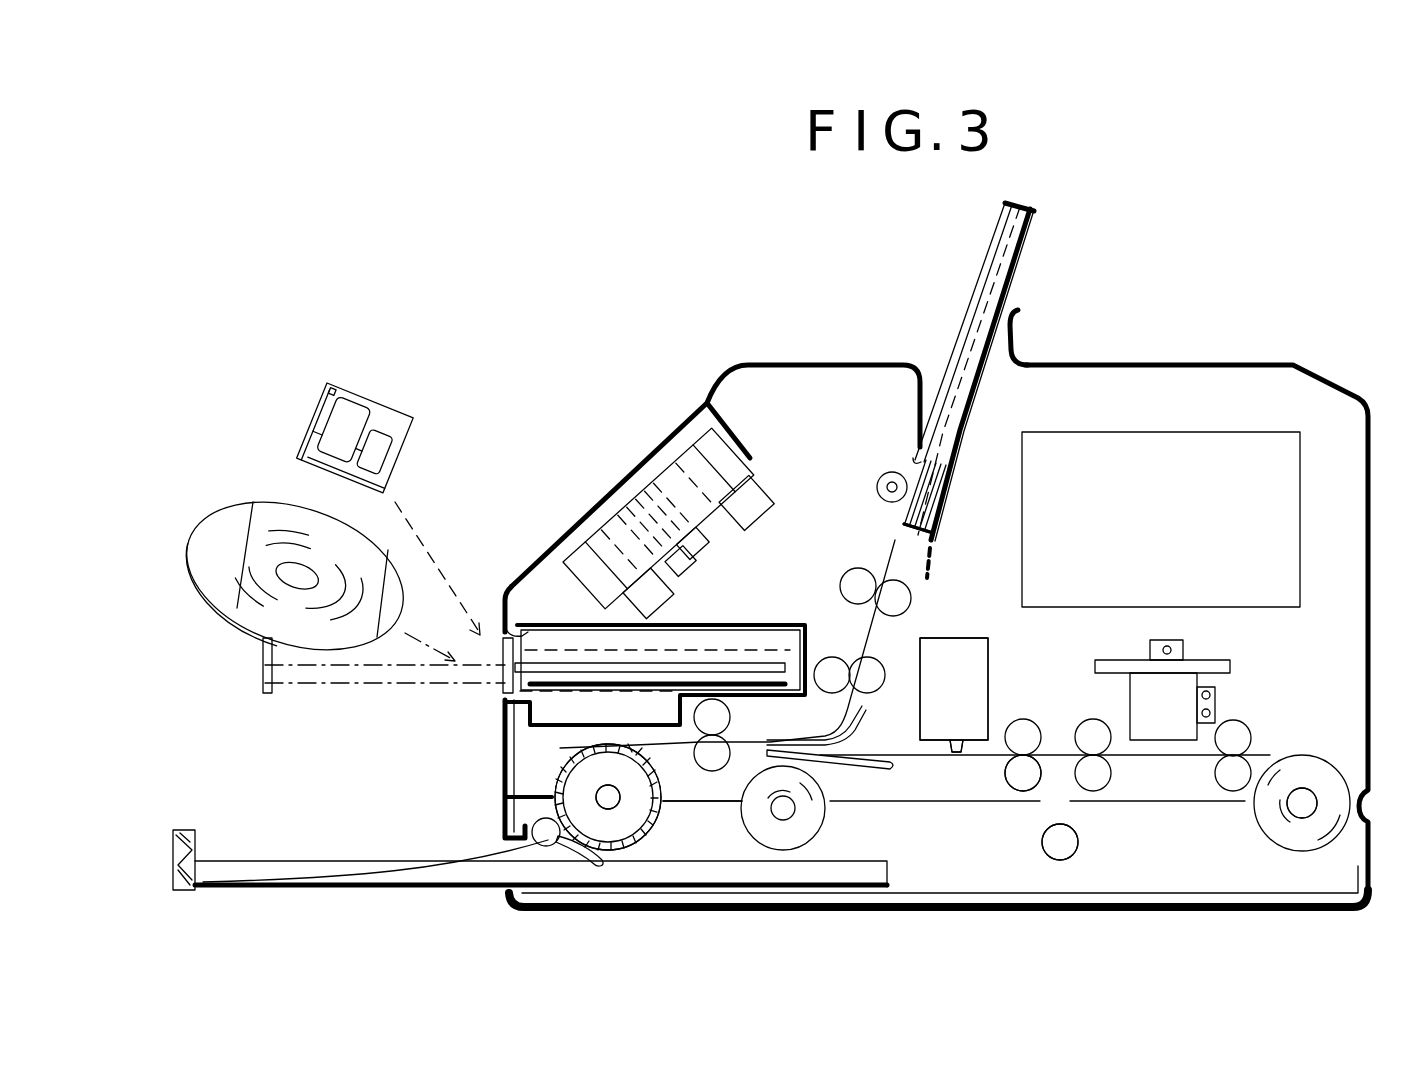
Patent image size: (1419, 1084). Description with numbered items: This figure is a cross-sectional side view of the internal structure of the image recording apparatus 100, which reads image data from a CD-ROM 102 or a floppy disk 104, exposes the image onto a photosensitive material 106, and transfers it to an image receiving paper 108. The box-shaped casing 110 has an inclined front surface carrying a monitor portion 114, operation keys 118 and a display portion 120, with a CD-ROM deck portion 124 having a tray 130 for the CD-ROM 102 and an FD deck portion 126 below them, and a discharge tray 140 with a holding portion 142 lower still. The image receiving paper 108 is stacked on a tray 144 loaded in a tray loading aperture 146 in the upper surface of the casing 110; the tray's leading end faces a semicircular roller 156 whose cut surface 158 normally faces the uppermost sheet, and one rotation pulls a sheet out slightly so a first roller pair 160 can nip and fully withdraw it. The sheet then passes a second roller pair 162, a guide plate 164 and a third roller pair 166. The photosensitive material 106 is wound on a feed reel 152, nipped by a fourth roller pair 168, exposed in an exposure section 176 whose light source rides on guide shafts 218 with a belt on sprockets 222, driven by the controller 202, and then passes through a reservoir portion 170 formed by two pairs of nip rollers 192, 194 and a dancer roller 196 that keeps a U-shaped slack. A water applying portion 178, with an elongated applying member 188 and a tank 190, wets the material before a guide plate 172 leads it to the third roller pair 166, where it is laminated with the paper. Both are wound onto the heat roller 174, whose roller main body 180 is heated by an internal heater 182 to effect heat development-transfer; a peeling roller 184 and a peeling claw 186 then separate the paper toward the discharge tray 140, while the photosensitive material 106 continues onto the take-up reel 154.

The image recording apparatus 100 is at (696, 324).
The CD-ROM 102 is at (250, 500).
The floppy disk 104 is at (402, 412).
The photosensitive material 106 is at (1256, 758).
The image receiving paper 108 is at (990, 256).
The casing 110 is at (830, 363).
The monitor portion 114 is at (690, 440).
The operation keys 118 is at (650, 605).
The display portion 120 is at (757, 470).
The CD-ROM deck portion 124 is at (500, 690).
The FD deck portion 126 is at (546, 647).
The tray 130 is at (503, 645).
The discharge tray 140 is at (320, 890).
The holding portion 142 is at (198, 860).
The tray 144 is at (1030, 232).
The tray loading aperture 146 is at (922, 382).
The feed reel 152 is at (1300, 818).
The take-up reel 154 is at (788, 822).
The semicircular roller 156 is at (886, 472).
The cut surface 158 is at (903, 516).
The first roller pair 160 is at (914, 596).
The second roller pair 162 is at (889, 662).
The guide plate 164 is at (880, 710).
The third roller pair 166 is at (737, 712).
The fourth roller pair 168 is at (1240, 722).
The reservoir portion 170 is at (1060, 862).
The guide plate 172 is at (890, 772).
The heat roller 174 is at (665, 833).
The exposure section 176 is at (1205, 661).
The water applying portion 178 is at (992, 672).
The roller main body 180 is at (648, 848).
The heater 182 is at (600, 795).
The peeling roller 184 is at (536, 828).
The peeling claw 186 is at (590, 864).
The applying member 188 is at (968, 760).
The tank 190 is at (970, 702).
The nip rollers 192 is at (1100, 780).
The nip rollers 194 is at (1020, 783).
The dancer roller 196 is at (1068, 848).
The controller 202 is at (1140, 432).
The guide shafts 218 is at (1202, 695).
The sprockets 222 is at (1152, 642).